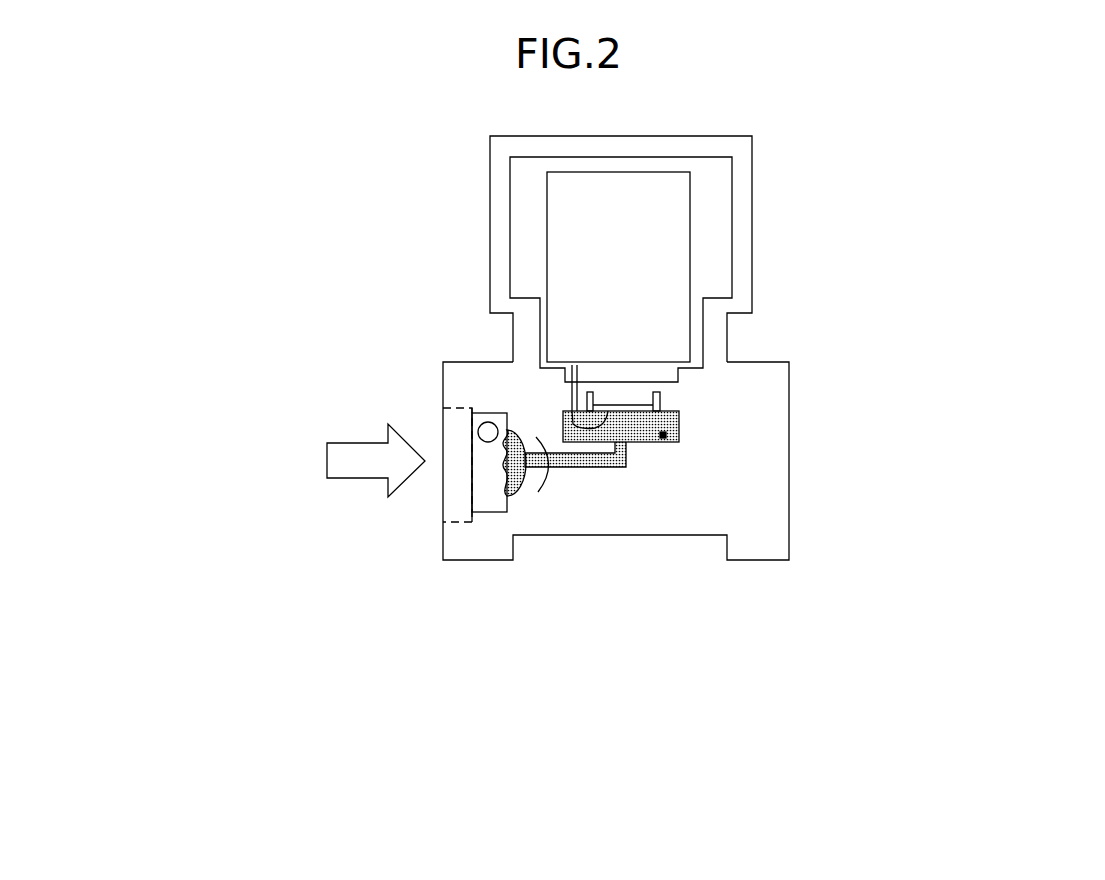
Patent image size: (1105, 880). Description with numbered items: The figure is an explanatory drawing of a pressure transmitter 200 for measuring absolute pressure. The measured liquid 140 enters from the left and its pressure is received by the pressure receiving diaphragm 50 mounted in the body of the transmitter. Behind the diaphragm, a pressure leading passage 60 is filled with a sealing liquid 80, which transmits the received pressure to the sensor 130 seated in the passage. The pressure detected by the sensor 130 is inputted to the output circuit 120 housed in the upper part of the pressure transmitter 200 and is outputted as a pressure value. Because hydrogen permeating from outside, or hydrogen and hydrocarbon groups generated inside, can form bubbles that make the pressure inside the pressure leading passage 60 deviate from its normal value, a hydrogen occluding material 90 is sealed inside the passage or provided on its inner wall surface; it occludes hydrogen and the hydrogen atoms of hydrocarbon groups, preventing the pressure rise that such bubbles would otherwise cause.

The pressure receiving diaphragm 50 is at (507, 465).
The pressure leading passage 60 is at (548, 445).
The sealing liquid 80 is at (663, 419).
The hydrogen occluding material 90 is at (666, 435).
The output circuit 120 is at (618, 267).
The sensor 130 is at (640, 405).
The measured liquid 140 is at (237, 460).
The pressure transmitter 200 is at (805, 585).